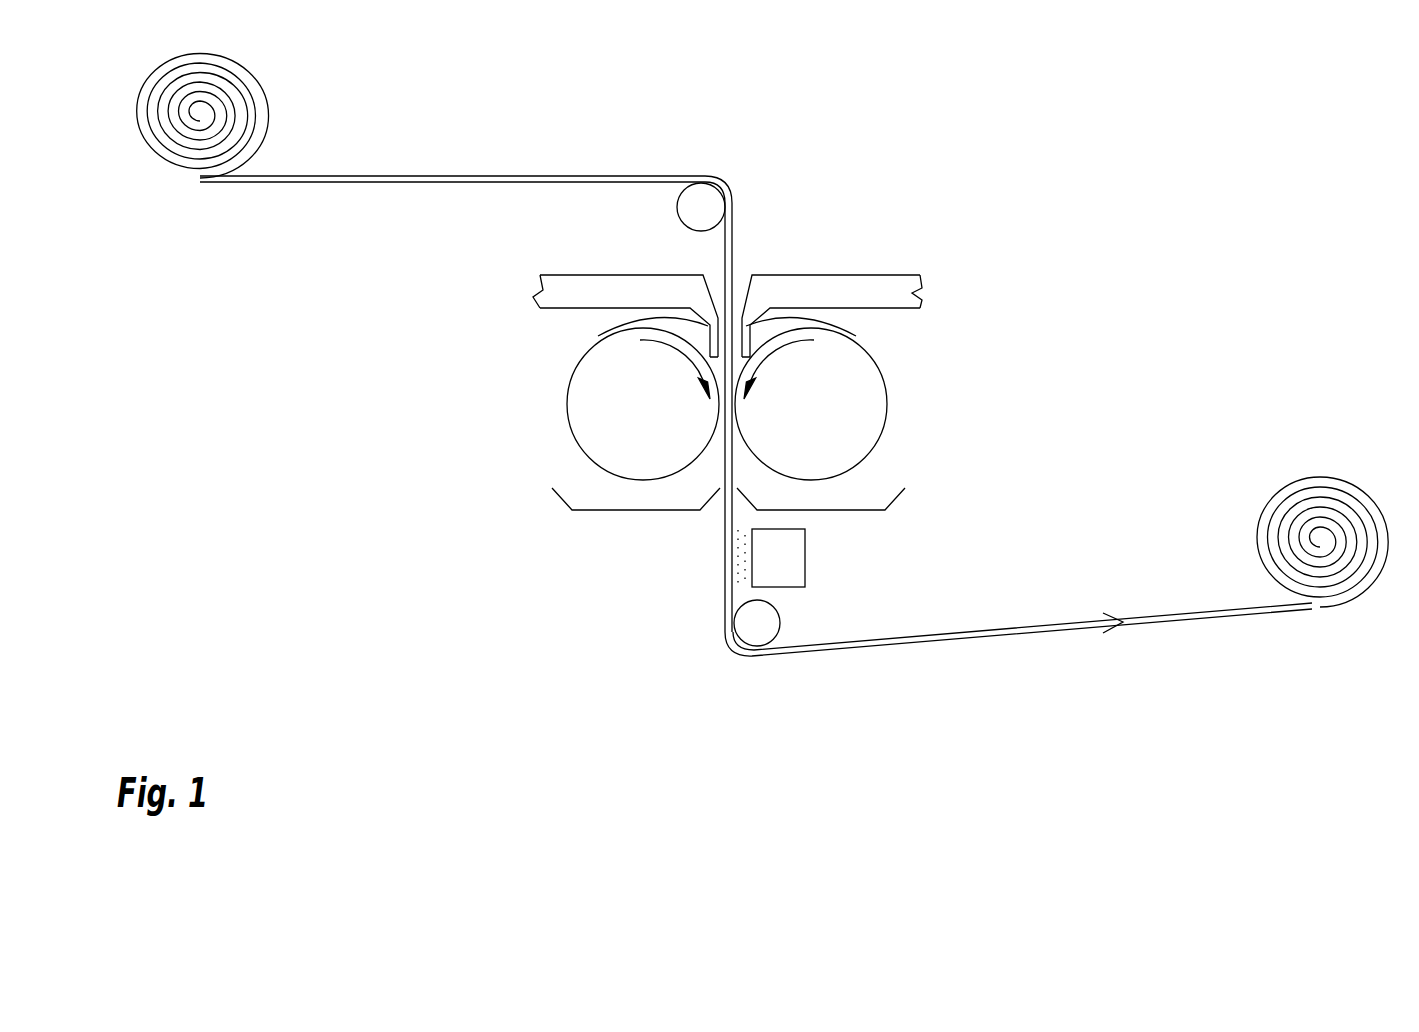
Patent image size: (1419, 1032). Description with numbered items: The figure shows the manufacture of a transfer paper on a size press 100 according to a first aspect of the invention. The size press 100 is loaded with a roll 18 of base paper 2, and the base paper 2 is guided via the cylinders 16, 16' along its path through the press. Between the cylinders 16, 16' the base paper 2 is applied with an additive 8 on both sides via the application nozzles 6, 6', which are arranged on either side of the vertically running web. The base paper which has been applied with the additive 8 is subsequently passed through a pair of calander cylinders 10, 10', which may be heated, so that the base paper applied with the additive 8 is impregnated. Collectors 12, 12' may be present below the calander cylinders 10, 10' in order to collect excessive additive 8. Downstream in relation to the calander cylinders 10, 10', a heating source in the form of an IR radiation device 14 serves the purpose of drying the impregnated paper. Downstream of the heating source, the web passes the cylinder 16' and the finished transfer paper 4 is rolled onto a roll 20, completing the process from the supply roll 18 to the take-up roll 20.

The size press 100 is at (930, 112).
The base paper 2 is at (458, 176).
The transfer paper 4 is at (1067, 633).
The application nozzle 6 is at (551, 316).
The application nozzle 6' is at (926, 316).
The additive 8 is at (742, 310).
The calander cylinder 10 is at (559, 404).
The calander cylinder 10' is at (914, 404).
The collector 12 is at (626, 582).
The collector 12' is at (909, 528).
The IR radiation device 14 is at (805, 575).
The cylinder 16 is at (591, 209).
The cylinder 16' is at (827, 622).
The roll of base paper 18 is at (257, 77).
The roll 20 is at (1360, 583).